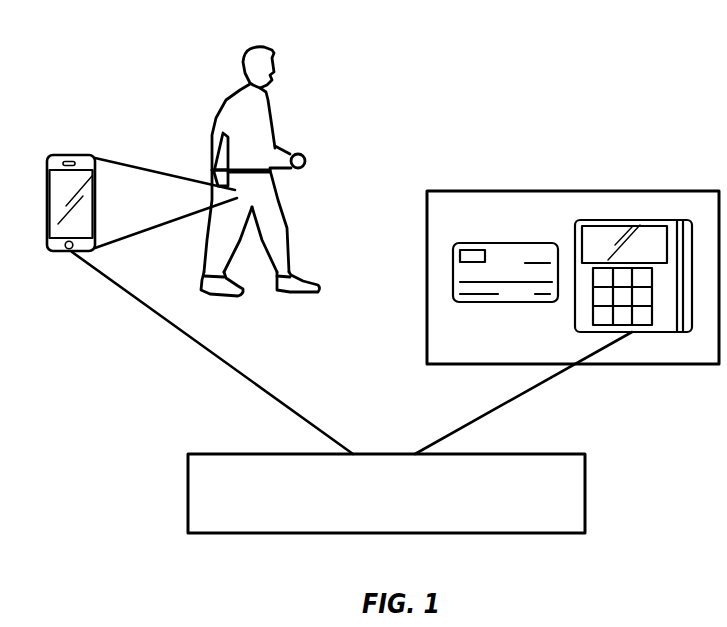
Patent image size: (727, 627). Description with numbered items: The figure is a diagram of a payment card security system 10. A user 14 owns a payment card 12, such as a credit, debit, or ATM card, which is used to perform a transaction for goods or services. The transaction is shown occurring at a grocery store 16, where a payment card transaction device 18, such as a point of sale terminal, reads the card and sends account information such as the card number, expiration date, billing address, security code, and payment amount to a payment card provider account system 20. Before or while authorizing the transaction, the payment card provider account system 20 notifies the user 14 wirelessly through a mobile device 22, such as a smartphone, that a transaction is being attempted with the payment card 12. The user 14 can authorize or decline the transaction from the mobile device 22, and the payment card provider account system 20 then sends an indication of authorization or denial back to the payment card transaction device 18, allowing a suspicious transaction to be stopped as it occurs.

The payment card security system 10 is at (538, 46).
The payment card 12 is at (508, 243).
The user 14 is at (229, 93).
The grocery store 16 is at (573, 191).
The payment card transaction device 18 is at (633, 220).
The payment card provider account system 20 is at (585, 491).
The mobile device 22 is at (48, 201).